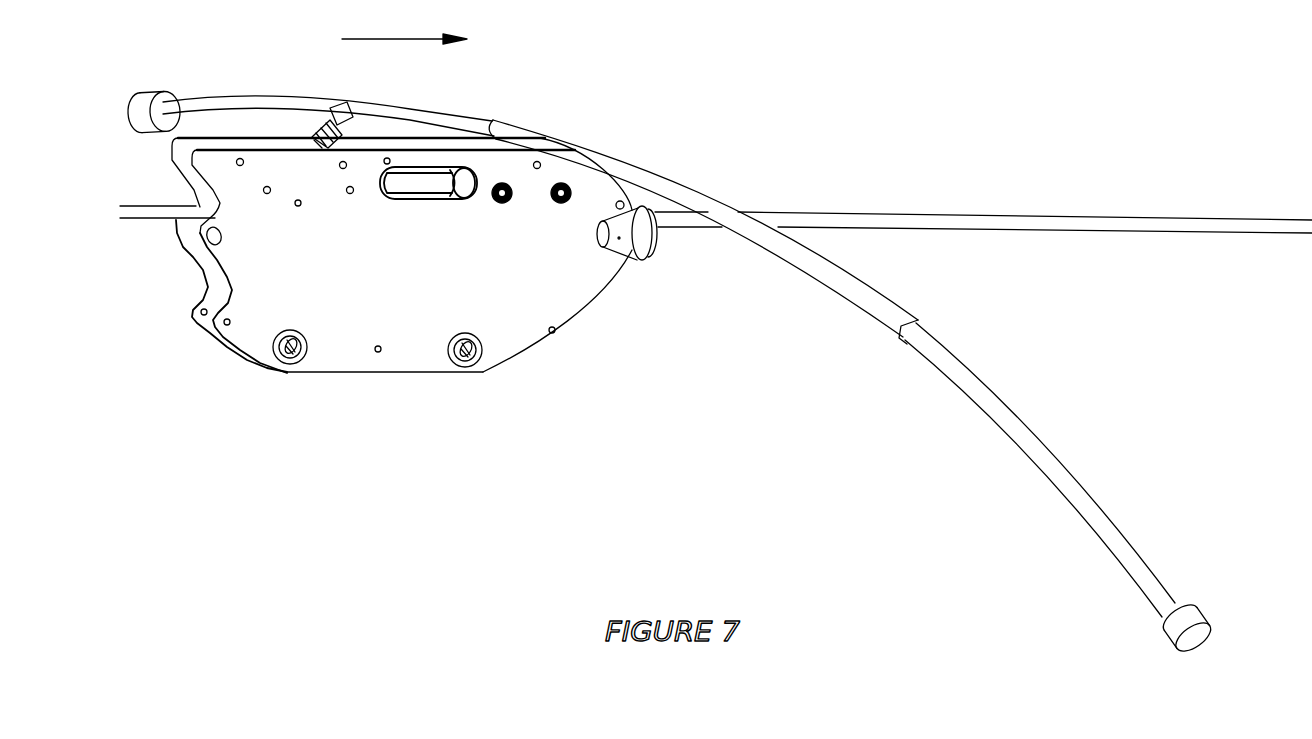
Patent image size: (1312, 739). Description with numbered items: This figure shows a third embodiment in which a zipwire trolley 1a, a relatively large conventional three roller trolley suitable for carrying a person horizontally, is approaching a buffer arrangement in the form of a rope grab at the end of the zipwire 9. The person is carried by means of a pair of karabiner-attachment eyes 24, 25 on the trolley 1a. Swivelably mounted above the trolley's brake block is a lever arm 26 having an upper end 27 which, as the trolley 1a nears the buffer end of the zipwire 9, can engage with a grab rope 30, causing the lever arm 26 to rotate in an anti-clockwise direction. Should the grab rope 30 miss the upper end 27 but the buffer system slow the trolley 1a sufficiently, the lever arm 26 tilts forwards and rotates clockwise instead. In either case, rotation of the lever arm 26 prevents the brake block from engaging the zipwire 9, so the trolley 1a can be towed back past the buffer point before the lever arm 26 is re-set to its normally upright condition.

The zipwire trolley 1a is at (606, 133).
The zipwire 9 is at (1043, 230).
The karabiner-attachment eye 24 is at (300, 360).
The karabiner-attachment eye 25 is at (475, 362).
The lever arm 26 is at (349, 134).
The upper end 27 is at (350, 105).
The grab rope 30 is at (883, 299).